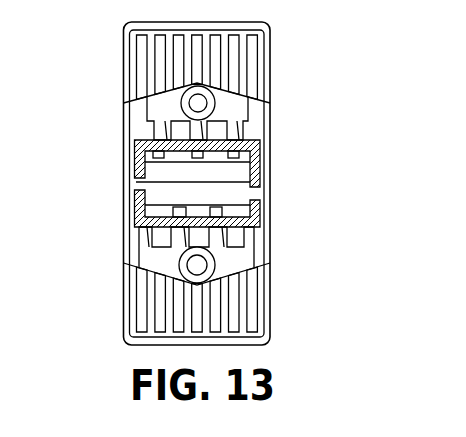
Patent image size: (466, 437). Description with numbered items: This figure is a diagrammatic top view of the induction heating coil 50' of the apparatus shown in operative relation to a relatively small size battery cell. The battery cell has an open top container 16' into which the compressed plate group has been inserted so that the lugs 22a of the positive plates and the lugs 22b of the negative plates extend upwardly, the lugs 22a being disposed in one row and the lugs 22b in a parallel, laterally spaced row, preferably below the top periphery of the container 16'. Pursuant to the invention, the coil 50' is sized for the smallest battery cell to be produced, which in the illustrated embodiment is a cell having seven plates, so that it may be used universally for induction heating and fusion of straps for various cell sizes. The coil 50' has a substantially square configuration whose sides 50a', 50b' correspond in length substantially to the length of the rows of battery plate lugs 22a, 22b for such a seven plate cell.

The container 16' is at (240, 183).
The lug of positive plate 22a is at (147, 130).
The lug of negative plate 22b is at (258, 237).
The induction heating coil 50' is at (201, 164).
The side of induction heating coil 50a' is at (247, 144).
The side of induction heating coil 50b' is at (246, 199).